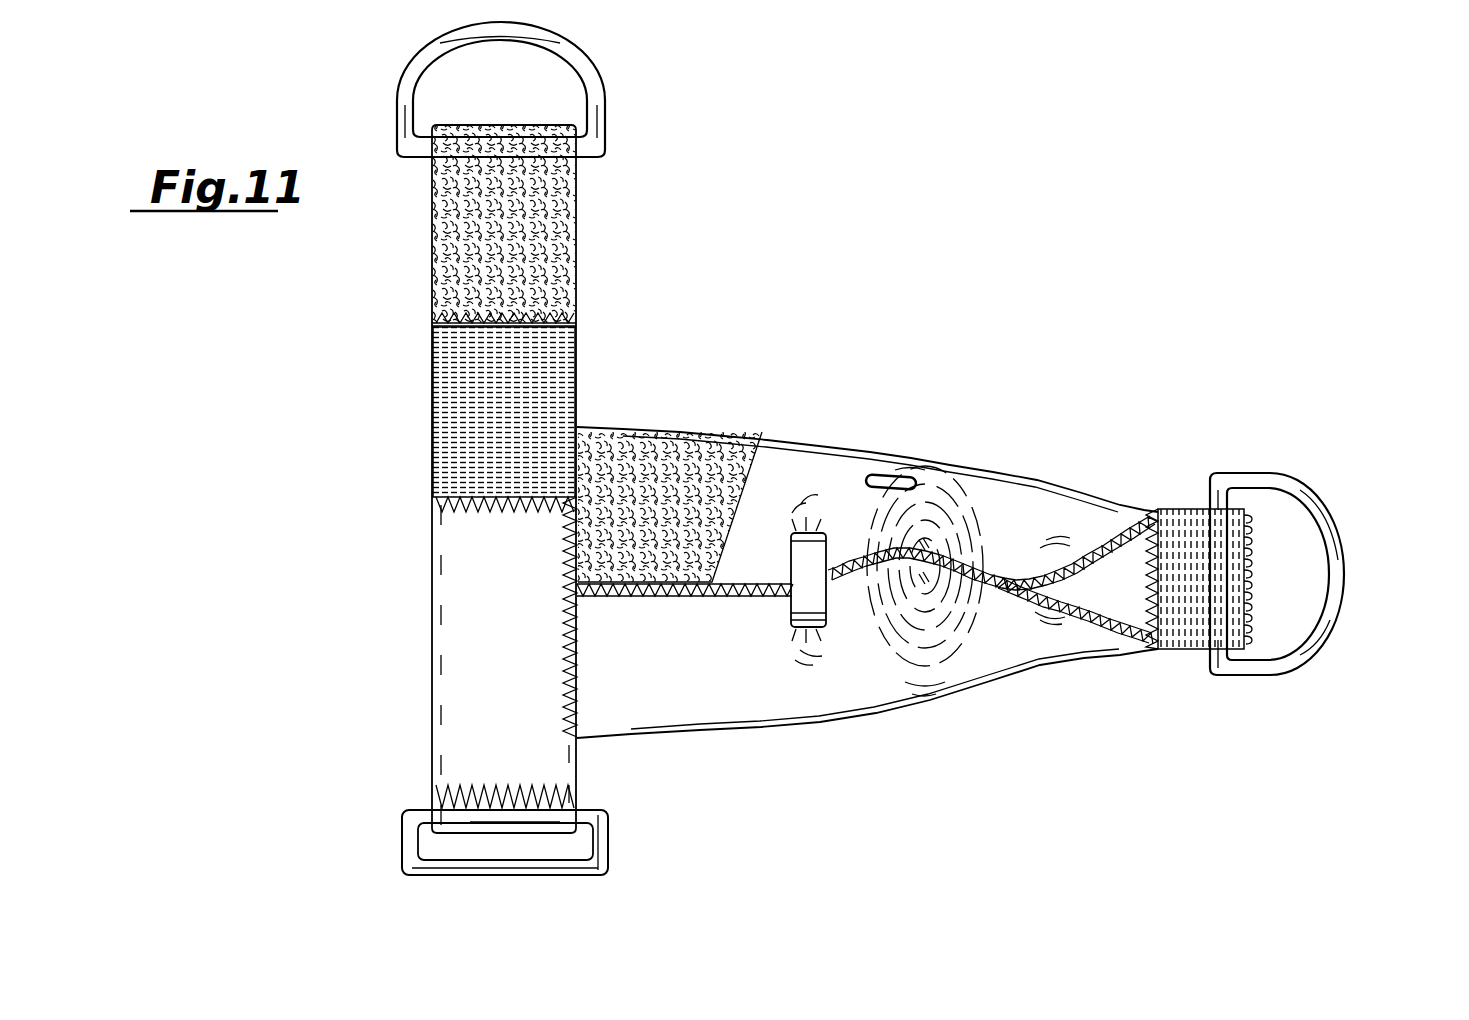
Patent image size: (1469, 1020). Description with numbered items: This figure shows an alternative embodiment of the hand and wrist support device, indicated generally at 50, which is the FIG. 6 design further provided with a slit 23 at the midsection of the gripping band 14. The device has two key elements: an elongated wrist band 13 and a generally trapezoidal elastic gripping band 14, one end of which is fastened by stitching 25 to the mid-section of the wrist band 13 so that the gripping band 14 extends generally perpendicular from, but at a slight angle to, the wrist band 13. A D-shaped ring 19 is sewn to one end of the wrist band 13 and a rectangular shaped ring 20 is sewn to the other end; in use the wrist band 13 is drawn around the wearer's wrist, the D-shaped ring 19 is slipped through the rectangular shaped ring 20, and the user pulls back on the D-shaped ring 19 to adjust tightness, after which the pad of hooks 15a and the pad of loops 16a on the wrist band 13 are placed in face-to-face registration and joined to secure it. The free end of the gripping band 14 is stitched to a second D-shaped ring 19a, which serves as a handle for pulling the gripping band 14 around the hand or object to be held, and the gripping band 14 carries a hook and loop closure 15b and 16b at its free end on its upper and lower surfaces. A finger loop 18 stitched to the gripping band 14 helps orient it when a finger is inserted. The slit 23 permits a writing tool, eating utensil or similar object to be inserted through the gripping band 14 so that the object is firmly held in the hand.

The hand and wrist support device embodiment 50 is at (1107, 412).
The wrist band 13 is at (505, 635).
The gripping band 14 is at (1003, 478).
The pad of hooks 15a is at (470, 398).
The hook closure pad 15b is at (1202, 614).
The pad of loops 16a is at (495, 210).
The loop closure pad 16b is at (645, 480).
The finger loop 18 is at (813, 547).
The D-shaped ring 19 is at (425, 58).
The D-shaped ring 19a is at (1336, 572).
The rectangular shaped ring 20 is at (600, 853).
The slit 23 is at (888, 483).
The stitching 25 is at (460, 300).